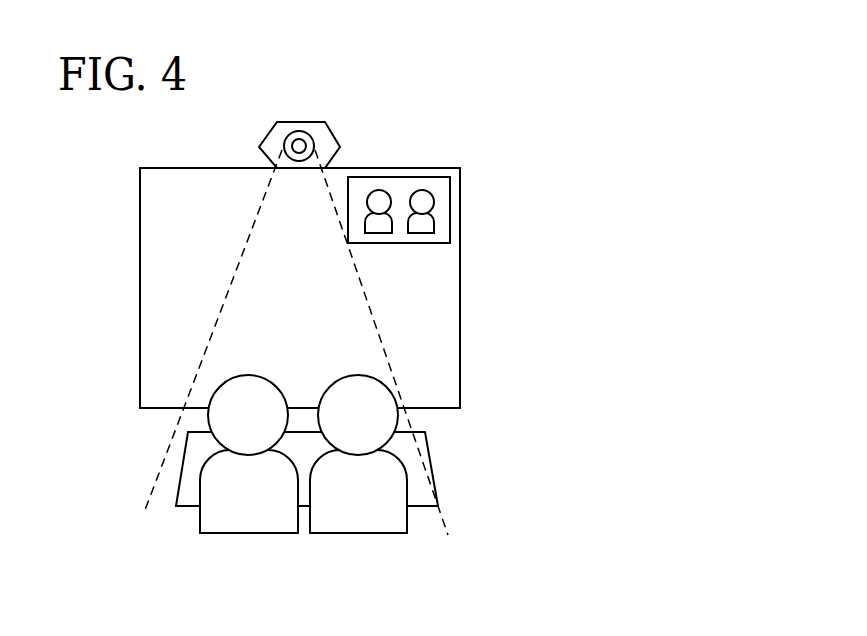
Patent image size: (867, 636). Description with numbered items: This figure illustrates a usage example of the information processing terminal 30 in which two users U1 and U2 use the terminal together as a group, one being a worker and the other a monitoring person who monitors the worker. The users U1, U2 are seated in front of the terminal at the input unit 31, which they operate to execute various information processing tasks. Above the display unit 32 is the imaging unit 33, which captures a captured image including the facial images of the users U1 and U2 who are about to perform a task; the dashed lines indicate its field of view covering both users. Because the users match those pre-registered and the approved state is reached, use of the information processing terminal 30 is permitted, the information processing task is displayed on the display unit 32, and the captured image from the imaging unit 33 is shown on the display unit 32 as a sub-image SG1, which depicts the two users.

The information processing terminal 30 is at (375, 165).
The input unit 31 is at (427, 448).
The display unit 32 is at (460, 360).
The imaging unit 33 is at (301, 122).
The sub-image SG1 is at (450, 212).
The user U1 is at (250, 520).
The user U2 is at (356, 519).